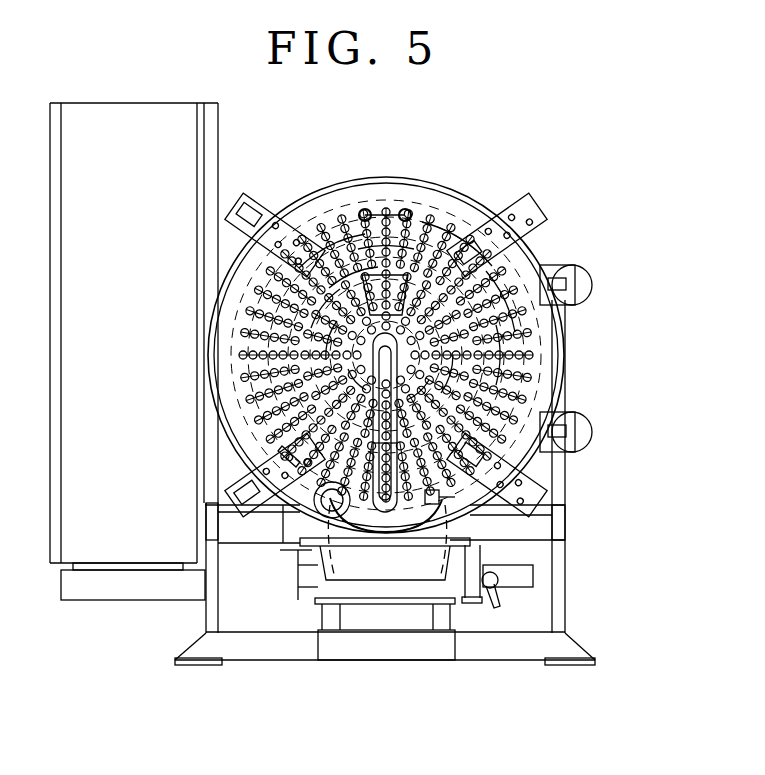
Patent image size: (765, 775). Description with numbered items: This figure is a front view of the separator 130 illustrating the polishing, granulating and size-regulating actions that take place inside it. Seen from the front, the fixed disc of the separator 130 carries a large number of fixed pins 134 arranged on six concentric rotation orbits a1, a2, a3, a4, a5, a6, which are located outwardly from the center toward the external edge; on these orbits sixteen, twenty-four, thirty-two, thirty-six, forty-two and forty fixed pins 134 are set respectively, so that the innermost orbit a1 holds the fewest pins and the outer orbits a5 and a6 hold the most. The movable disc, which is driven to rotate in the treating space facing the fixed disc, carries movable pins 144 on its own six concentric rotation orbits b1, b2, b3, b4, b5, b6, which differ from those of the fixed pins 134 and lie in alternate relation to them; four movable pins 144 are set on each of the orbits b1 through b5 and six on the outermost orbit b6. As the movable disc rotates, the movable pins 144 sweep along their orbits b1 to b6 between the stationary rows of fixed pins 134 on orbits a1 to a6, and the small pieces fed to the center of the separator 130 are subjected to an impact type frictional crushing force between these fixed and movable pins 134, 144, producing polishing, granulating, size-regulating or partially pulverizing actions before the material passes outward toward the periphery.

The separator 130 is at (572, 168).
The fixed pins 134 is at (452, 232).
The movable pins 144 is at (408, 212).
The concentric rotation orbit of fixed pins a1 is at (355, 381).
The concentric rotation orbit of fixed pins a2 is at (328, 340).
The concentric rotation orbit of fixed pins a3 is at (320, 306).
The concentric rotation orbit of fixed pins a4 is at (350, 275).
The concentric rotation orbit of fixed pins a5 is at (331, 246).
The concentric rotation orbit of fixed pins a6 is at (378, 245).
The concentric rotation orbit of movable pins b1 is at (420, 392).
The concentric rotation orbit of movable pins b2 is at (450, 376).
The concentric rotation orbit of movable pins b3 is at (500, 350).
The concentric rotation orbit of movable pins b4 is at (505, 300).
The concentric rotation orbit of movable pins b5 is at (548, 266).
The concentric rotation orbit of movable pins b6 is at (455, 235).